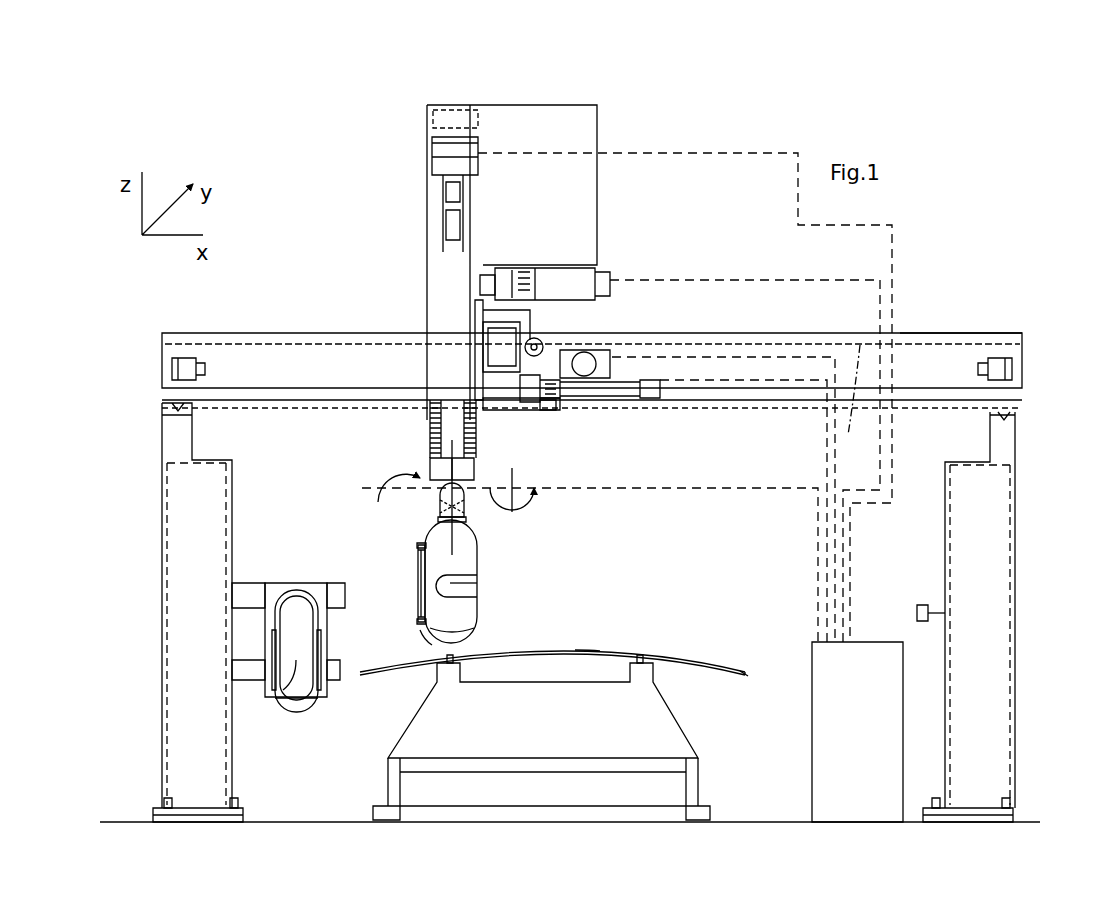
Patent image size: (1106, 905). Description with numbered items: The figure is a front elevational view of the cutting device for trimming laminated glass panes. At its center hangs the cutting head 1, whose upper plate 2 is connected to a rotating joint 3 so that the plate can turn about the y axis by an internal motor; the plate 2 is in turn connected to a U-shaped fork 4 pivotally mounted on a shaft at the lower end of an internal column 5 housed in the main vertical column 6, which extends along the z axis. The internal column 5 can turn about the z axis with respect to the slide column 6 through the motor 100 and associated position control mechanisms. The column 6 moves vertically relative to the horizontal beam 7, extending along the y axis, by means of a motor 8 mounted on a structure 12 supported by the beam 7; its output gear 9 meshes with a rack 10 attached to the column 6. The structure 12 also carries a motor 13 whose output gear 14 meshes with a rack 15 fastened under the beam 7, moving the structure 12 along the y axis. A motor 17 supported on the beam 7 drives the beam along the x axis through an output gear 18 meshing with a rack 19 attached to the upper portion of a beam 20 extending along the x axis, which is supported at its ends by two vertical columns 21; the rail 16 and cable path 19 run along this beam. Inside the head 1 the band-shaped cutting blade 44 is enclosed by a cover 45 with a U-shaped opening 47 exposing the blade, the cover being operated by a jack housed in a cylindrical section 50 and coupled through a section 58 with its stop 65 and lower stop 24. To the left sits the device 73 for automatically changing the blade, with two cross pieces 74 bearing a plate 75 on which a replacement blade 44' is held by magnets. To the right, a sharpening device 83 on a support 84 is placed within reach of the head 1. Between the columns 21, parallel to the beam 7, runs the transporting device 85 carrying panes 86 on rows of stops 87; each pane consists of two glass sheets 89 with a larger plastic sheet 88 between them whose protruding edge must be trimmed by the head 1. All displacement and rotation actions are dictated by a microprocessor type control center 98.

The cutting head 1 is at (478, 574).
The upper plate 2 is at (468, 516).
The rotating joint 3 is at (438, 492).
The U-shaped fork 4 is at (438, 506).
The internal column 5 is at (462, 493).
The main vertical column 6 is at (433, 472).
The horizontal beam 7 is at (492, 352).
The motor 8 is at (585, 270).
The output gear 9 is at (482, 283).
The rack 10 is at (478, 302).
The structure 12 is at (520, 100).
The motor 13 is at (645, 380).
The output gear 14 is at (535, 356).
The rack 15 is at (518, 400).
The cross beam 16 is at (292, 320).
The motor 17 is at (590, 360).
The output gear 18 is at (546, 400).
The rack 19 is at (853, 404).
The beam 20 is at (945, 330).
The vertical columns 21 is at (158, 648).
The stop 24 is at (422, 633).
The cutting blade 44 is at (481, 584).
The workpiece pocket 44' is at (298, 712).
The cover 45 is at (458, 627).
The U-shaped opening 47 is at (455, 592).
The cylindrical section 50 is at (418, 583).
The section 58 is at (416, 621).
The upper stop 65 is at (418, 548).
The device for automatically changing the cutting blade 73 is at (297, 582).
The cross pieces 74 is at (250, 600).
The plate 75 is at (320, 586).
The sharpening device 83 is at (914, 606).
The support 84 is at (937, 610).
The transporting device 85 is at (684, 737).
The panes 86 is at (706, 658).
The stops 87 is at (455, 662).
The plastic sheet 88 is at (748, 676).
The glass sheets 89 is at (580, 650).
The control center 98 is at (868, 638).
The motor 100 is at (485, 168).